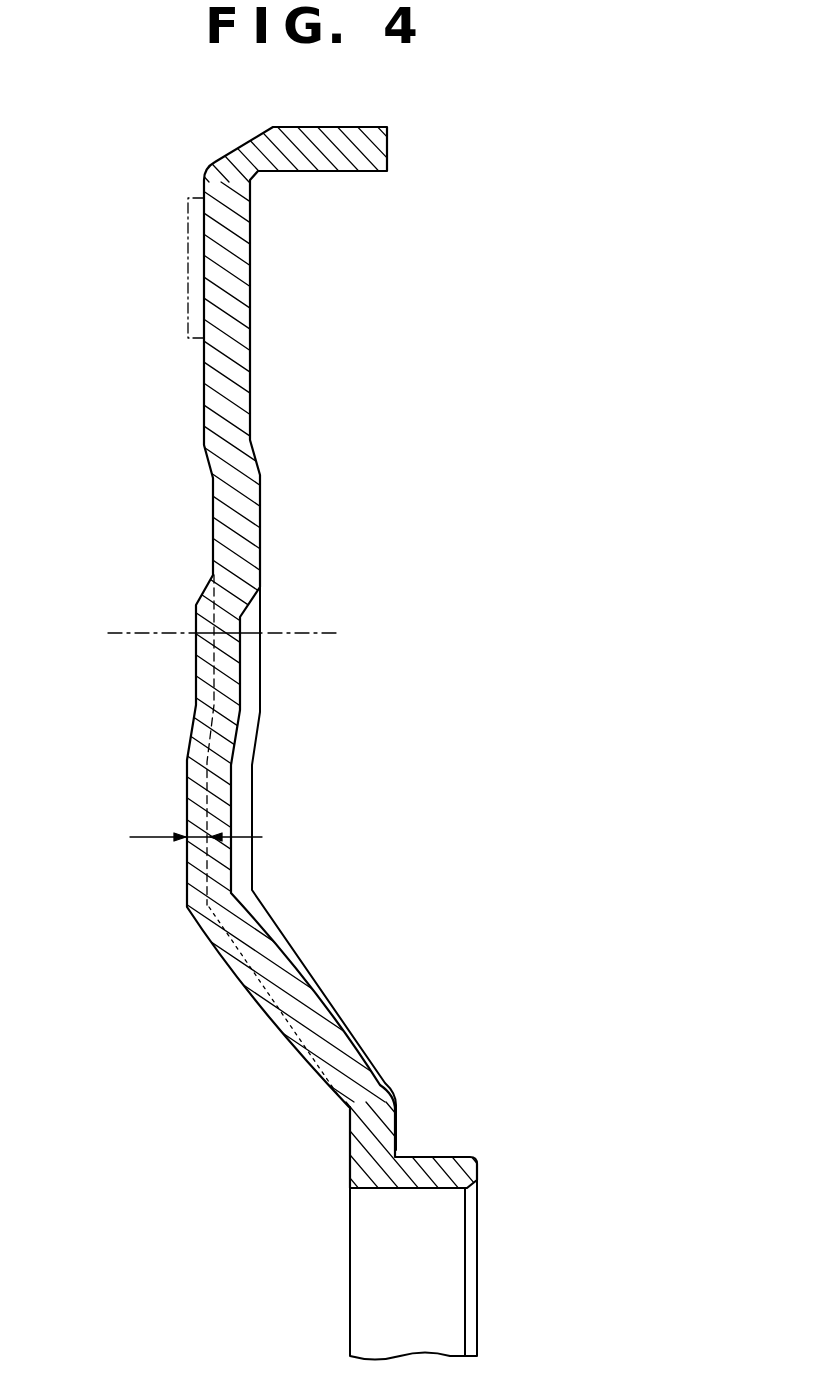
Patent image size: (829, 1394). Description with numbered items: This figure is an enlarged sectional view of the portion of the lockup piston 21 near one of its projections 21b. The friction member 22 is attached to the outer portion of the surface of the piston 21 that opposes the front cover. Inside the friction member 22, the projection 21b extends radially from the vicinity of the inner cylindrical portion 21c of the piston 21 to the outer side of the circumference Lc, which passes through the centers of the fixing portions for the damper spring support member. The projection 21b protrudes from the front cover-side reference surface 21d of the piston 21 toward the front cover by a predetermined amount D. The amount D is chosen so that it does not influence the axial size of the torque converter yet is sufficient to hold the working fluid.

The piston 21 is at (90, 152).
The projections 21b is at (195, 780).
The inner cylindrical portion 21c is at (433, 1155).
The reference surface 21d is at (200, 698).
The friction member 22 is at (188, 280).
The circumference Lc is at (204, 632).
The predetermined amount D is at (153, 836).